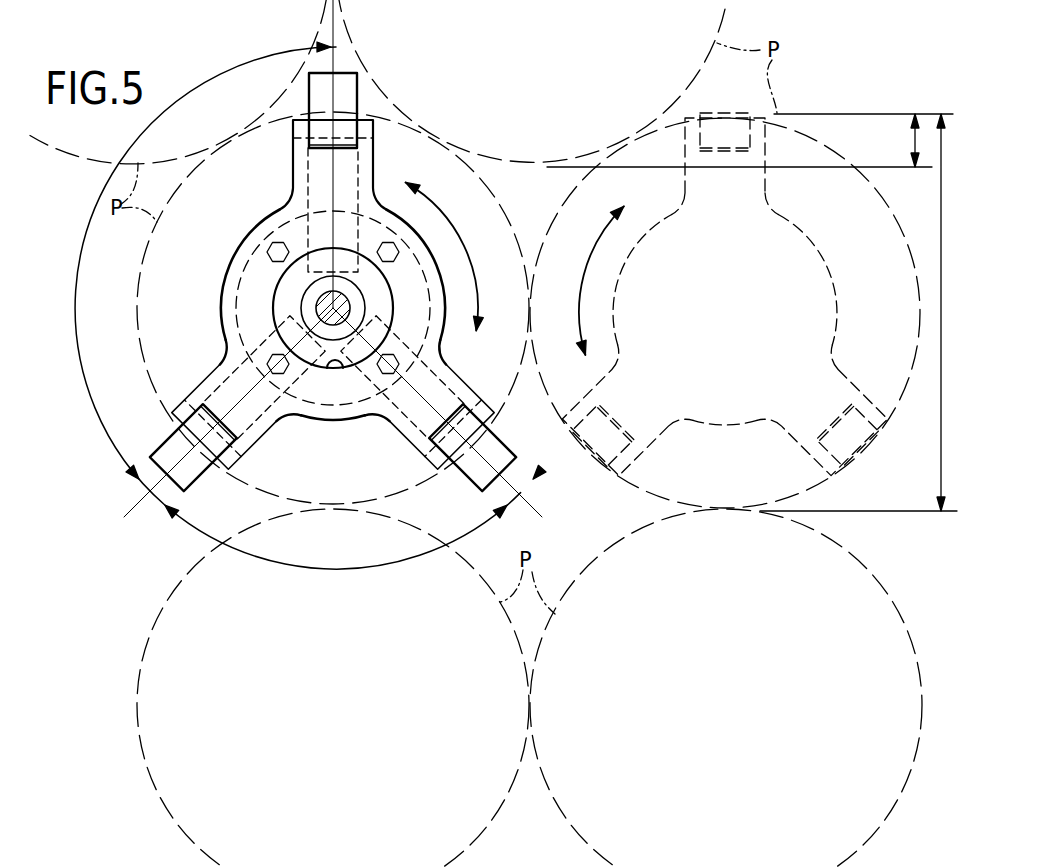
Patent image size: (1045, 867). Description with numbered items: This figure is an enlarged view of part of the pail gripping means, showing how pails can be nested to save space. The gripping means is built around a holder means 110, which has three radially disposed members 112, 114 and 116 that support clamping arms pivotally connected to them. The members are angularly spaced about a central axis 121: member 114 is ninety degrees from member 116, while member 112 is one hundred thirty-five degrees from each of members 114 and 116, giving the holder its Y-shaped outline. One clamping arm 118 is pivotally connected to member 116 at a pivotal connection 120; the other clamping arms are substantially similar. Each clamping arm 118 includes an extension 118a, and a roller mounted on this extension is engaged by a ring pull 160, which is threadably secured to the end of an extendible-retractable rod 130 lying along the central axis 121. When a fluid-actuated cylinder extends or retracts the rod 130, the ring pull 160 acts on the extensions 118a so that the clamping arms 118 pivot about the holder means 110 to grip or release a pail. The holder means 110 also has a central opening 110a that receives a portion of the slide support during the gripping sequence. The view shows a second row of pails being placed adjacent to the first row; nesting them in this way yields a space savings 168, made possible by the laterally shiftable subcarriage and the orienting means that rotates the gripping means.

The holder means 110 is at (279, 214).
The central opening 110a is at (340, 362).
The radially disposed member 112 is at (368, 166).
The radially disposed member 114 is at (446, 332).
The radially disposed member 116 is at (250, 457).
The clamping arm 118 is at (357, 90).
The extension 118a is at (240, 363).
The pivotal connection 120 is at (322, 142).
The central axis 121 is at (333, 303).
The extendible-retractable rod 130 is at (331, 309).
The ring pull 160 is at (256, 251).
The space savings 168 is at (912, 141).